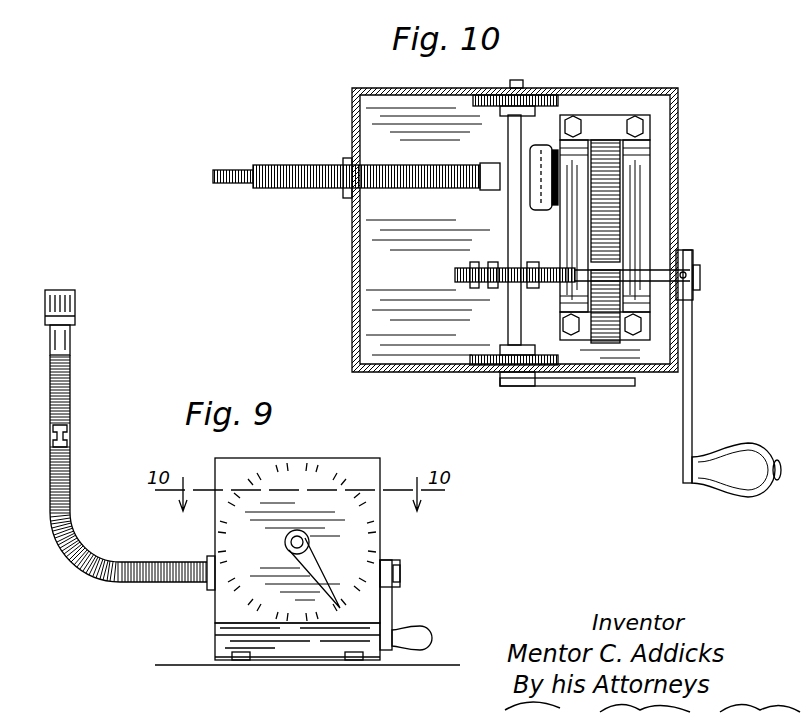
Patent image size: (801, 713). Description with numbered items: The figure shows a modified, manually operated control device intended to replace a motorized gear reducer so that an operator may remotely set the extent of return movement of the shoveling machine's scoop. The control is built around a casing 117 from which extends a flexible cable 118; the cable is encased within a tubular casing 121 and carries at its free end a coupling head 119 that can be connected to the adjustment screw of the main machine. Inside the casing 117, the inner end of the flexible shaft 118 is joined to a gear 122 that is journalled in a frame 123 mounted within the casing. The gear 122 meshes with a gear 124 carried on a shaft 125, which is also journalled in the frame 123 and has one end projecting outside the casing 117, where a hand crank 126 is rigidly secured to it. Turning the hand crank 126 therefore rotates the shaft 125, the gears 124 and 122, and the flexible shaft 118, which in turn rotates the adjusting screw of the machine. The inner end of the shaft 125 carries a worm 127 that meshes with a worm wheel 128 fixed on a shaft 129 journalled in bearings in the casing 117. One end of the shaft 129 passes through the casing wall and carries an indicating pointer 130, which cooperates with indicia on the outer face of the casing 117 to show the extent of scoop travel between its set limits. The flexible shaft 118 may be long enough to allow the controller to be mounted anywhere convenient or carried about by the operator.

In FIG. 10, the casing 117 is at (352, 256).
In FIG. 9, the casing 117 is at (363, 440).
In FIG. 10, the flexible cable 118 is at (227, 184).
In FIG. 9, the flexible cable 118 is at (66, 441).
In FIG. 9, the coupling head 119 is at (76, 313).
In FIG. 10, the tubular casing 121 is at (310, 148).
In FIG. 9, the tubular casing 121 is at (70, 396).
In FIG. 10, the gear 122 is at (604, 142).
In FIG. 10, the frame 123 is at (571, 138).
In FIG. 10, the gear 124 is at (610, 333).
In FIG. 10, the shaft 125 is at (660, 272).
In FIG. 9, the shaft 125 is at (400, 575).
In FIG. 10, the hand crank 126 is at (692, 386).
In FIG. 9, the hand crank 126 is at (393, 606).
In FIG. 10, the worm 127 is at (500, 258).
In FIG. 10, the worm wheel 128 is at (478, 283).
In FIG. 10, the shaft 129 is at (507, 325).
In FIG. 10, the indicating pointer 130 is at (558, 384).
In FIG. 9, the indicating pointer 130 is at (310, 567).